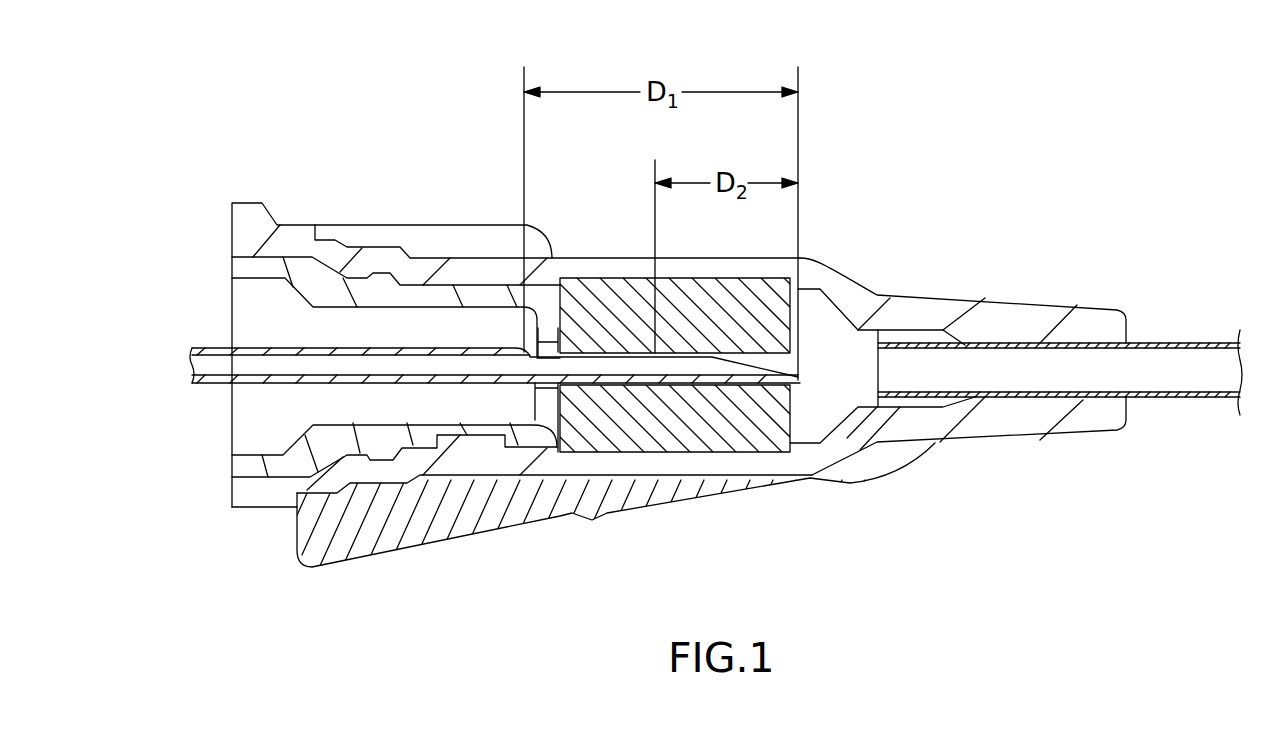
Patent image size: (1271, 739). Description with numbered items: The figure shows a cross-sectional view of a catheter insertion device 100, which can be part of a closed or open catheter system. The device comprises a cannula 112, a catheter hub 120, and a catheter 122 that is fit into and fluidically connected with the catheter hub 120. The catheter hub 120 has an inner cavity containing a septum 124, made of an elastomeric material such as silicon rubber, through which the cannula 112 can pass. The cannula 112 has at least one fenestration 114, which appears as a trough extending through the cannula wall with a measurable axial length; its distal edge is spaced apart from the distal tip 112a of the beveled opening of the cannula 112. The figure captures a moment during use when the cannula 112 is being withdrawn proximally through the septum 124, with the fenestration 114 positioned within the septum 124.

The catheter insertion device 100 is at (336, 160).
The cannula 112 is at (698, 365).
The distal tip 112a is at (800, 386).
The fenestration 114 is at (593, 358).
The catheter hub 120 is at (1008, 294).
The catheter 122 is at (1157, 367).
The septum 124 is at (760, 298).